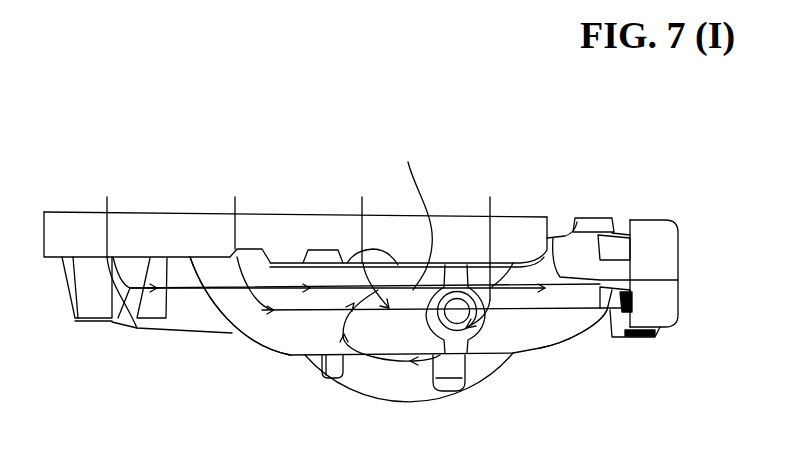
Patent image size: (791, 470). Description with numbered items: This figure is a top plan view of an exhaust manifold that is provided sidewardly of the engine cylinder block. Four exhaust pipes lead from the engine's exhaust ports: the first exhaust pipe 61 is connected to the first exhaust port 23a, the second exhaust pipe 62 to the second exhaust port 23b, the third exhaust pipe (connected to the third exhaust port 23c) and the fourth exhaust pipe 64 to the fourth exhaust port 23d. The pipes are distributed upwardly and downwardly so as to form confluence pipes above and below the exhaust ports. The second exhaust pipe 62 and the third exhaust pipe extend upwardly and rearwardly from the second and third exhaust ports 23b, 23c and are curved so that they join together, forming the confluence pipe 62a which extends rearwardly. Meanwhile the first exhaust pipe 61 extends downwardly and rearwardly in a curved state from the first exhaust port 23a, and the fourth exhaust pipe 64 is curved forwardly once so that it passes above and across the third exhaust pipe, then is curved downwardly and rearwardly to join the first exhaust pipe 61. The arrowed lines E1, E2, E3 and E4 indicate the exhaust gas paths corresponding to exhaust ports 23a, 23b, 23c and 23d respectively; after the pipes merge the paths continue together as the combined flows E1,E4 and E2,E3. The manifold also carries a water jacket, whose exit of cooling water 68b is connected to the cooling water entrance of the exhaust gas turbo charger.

The first exhaust pipe 61 is at (182, 333).
The second exhaust pipe 62 is at (250, 352).
The confluence pipe 62a is at (592, 335).
The fourth exhaust pipe 64 is at (417, 398).
The exit of cooling water 68b is at (477, 328).
The exhaust gas path E1 is at (107, 257).
The exhaust gas path E2 is at (235, 249).
The exhaust gas path E3 is at (362, 263).
The exhaust gas path E4 is at (490, 300).
The first exhaust port 23a is at (106, 213).
The second exhaust port 23b is at (231, 209).
The third exhaust port 23c is at (361, 216).
The fourth exhaust port 23d is at (489, 235).
The exhaust gas paths E1,E4 is at (417, 215).
The exhaust gas paths E2,E3 is at (543, 292).